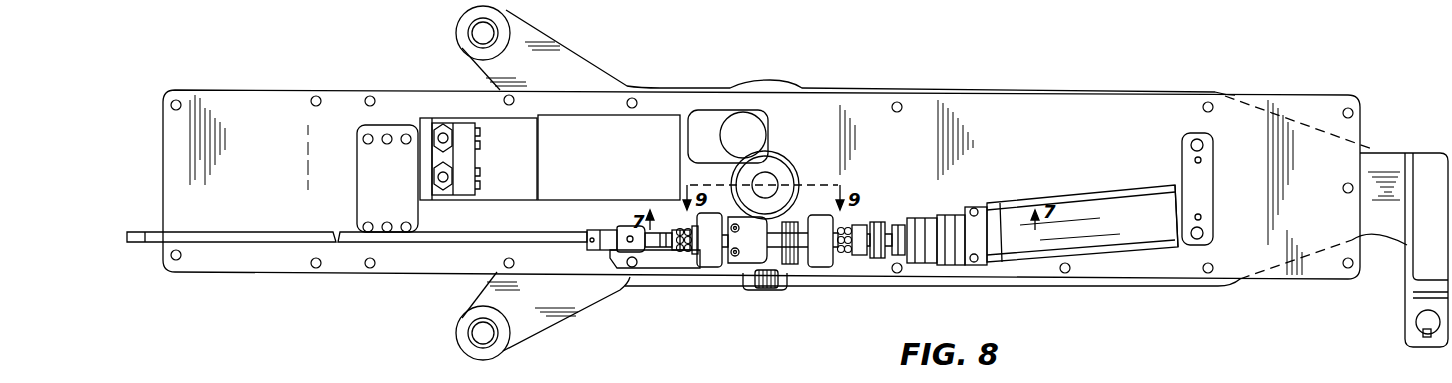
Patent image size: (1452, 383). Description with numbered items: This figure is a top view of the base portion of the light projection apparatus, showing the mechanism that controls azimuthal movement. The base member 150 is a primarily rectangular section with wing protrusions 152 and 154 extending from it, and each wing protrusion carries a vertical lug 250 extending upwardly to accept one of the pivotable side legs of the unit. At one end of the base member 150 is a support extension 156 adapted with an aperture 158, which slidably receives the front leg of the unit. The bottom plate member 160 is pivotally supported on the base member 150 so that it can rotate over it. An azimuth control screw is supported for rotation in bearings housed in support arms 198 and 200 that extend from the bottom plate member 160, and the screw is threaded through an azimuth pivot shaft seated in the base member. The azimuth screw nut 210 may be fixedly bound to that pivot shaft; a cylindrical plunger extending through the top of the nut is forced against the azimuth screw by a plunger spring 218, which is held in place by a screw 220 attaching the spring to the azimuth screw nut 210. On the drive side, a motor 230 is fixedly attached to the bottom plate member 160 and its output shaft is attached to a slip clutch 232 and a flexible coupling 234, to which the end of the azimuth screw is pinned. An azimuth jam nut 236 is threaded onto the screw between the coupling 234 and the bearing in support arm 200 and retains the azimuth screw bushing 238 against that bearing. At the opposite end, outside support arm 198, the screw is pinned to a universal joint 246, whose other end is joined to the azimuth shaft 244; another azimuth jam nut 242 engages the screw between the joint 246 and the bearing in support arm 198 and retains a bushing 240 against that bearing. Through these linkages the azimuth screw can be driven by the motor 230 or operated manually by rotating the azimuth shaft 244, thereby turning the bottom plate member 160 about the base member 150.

The base member 150 is at (1383, 173).
The wing protrusion 152 is at (558, 77).
The wing protrusion 154 is at (553, 312).
The support extension 156 is at (1430, 253).
The aperture 158 is at (1413, 330).
The bottom plate member 160 is at (1313, 110).
The support arm 198 is at (708, 265).
The support arm 200 is at (818, 262).
The azimuth screw nut 210 is at (783, 185).
The plunger spring 218 is at (770, 282).
The screw 220 is at (740, 255).
The motor 230 is at (1100, 230).
The slip clutch 232 is at (945, 220).
The flexible coupling 234 is at (880, 258).
The azimuth jam nut 236 is at (852, 223).
The azimuth screw bushing 238 is at (838, 254).
The bushing 240 is at (687, 257).
The azimuth jam nut 242 is at (680, 253).
The azimuth shaft 244 is at (440, 238).
The universal joint 246 is at (612, 245).
The vertical lugs 250 is at (483, 33).